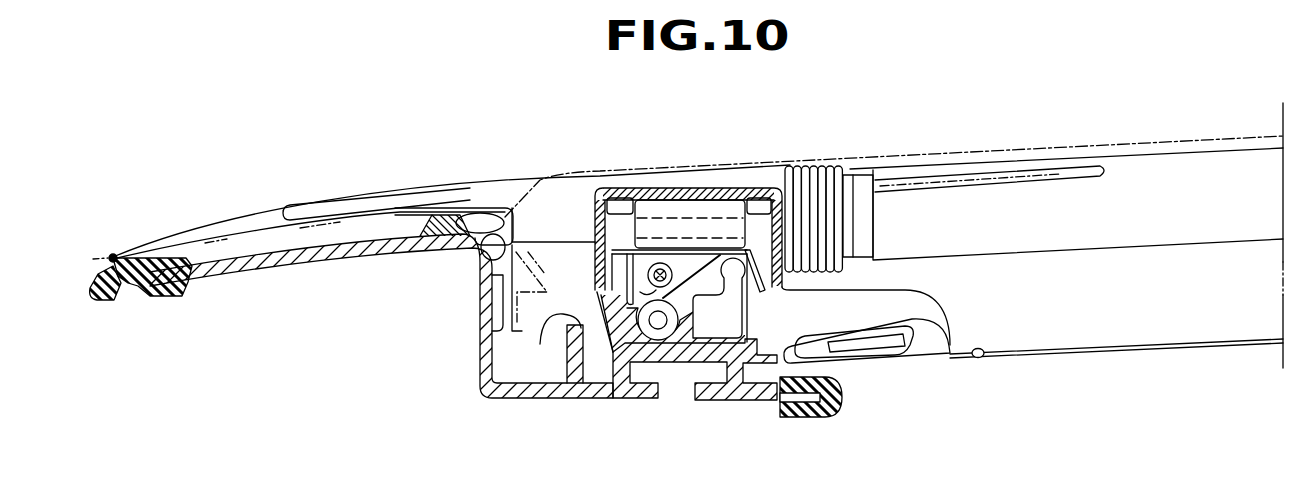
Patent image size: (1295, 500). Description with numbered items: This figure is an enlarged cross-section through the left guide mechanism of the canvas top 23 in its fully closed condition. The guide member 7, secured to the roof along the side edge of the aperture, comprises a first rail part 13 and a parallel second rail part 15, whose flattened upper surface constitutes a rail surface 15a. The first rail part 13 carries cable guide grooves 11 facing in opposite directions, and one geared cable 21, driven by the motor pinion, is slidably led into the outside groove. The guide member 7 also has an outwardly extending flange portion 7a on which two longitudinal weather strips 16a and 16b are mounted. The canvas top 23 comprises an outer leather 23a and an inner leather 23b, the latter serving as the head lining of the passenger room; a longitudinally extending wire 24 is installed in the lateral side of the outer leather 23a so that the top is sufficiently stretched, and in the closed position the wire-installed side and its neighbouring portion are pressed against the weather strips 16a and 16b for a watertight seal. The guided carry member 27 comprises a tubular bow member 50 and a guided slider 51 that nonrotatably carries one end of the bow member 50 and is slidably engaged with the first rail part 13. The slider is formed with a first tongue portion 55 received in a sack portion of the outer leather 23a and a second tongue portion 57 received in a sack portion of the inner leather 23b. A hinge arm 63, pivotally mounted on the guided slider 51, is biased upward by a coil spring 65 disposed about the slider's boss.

The guide member 7 is at (627, 402).
The outwardly extending flange portion 7a is at (328, 262).
The cable guide groove 11 is at (754, 283).
The first rail part 13 is at (692, 267).
The second rail part 15 is at (571, 362).
The rail surface 15a is at (540, 340).
The weather strip 16a is at (123, 284).
The weather strip 16b is at (438, 217).
The geared cable 21 is at (659, 263).
The canvas top 23 is at (1197, 140).
The outer leather 23a is at (1038, 147).
The inner leather 23b is at (1098, 355).
The wire 24 is at (114, 255).
The guided carry member 27 is at (1117, 158).
The tubular bow member 50 is at (973, 210).
The guided slider 51 is at (570, 215).
The first tongue portion 55 is at (353, 198).
The second tongue portion 57 is at (907, 342).
The hinge arm 63 is at (630, 193).
The coil spring 65 is at (805, 170).